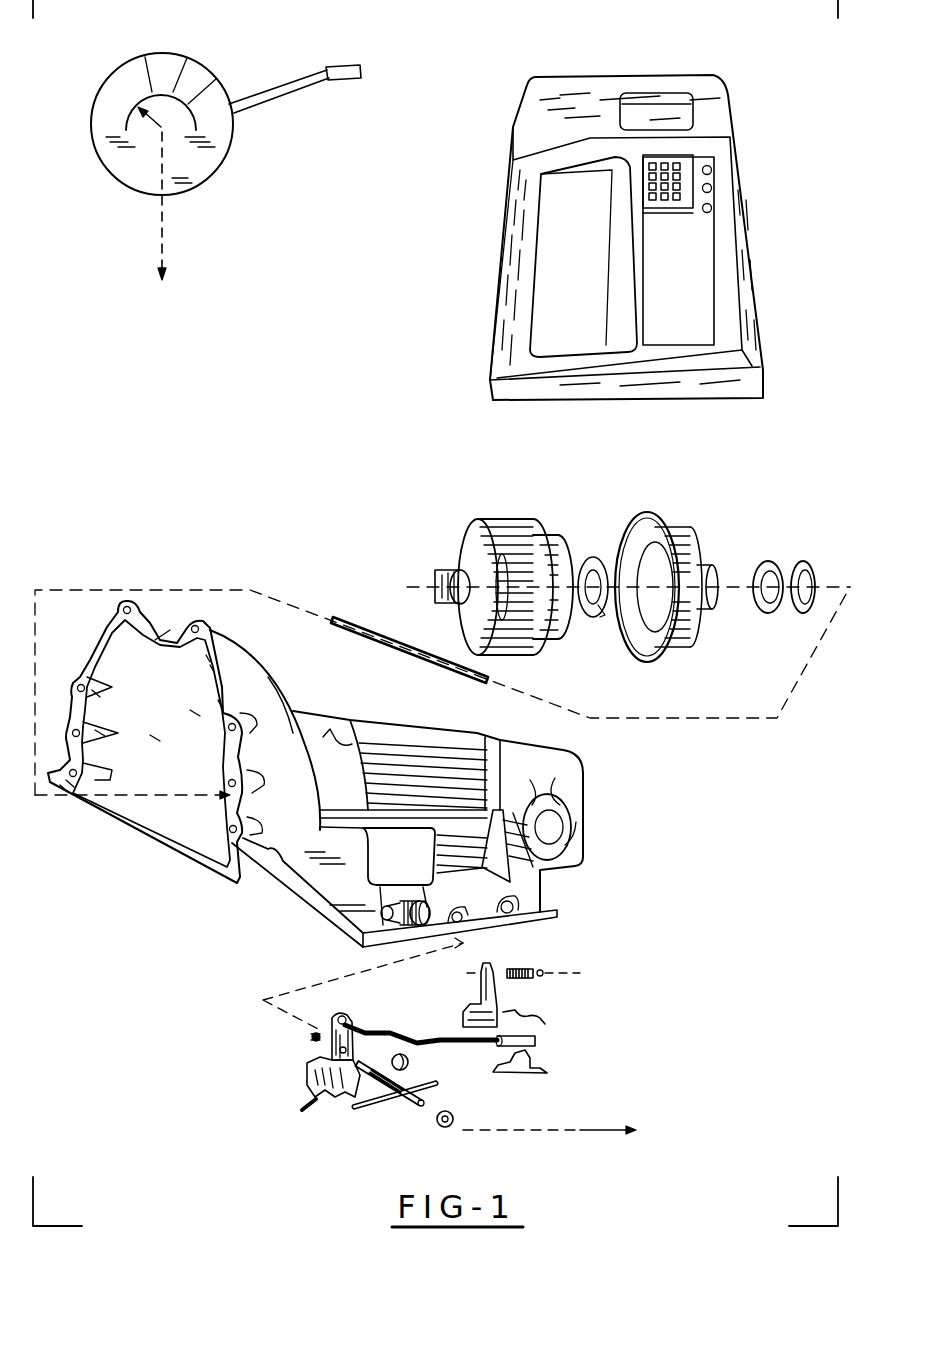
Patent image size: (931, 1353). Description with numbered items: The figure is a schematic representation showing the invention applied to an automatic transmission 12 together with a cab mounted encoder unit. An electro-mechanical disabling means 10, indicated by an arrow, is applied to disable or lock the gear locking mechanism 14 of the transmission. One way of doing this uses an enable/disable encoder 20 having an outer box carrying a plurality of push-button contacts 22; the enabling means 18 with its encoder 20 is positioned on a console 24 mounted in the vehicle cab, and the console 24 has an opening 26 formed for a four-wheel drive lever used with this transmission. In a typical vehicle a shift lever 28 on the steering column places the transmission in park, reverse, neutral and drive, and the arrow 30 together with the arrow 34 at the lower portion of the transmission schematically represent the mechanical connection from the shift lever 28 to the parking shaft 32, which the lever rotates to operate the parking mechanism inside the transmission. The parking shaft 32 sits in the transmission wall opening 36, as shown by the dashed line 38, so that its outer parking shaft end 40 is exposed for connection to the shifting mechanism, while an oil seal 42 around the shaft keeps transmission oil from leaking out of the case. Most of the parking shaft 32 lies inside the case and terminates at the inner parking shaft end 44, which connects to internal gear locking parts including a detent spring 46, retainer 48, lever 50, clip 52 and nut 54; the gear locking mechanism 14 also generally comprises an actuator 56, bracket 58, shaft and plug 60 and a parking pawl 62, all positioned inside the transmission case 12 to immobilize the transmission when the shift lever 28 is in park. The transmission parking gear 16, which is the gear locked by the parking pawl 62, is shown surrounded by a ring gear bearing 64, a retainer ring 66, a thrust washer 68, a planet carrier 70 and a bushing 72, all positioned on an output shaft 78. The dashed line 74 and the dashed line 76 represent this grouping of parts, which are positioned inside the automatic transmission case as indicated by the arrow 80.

The electro-mechanical disabling means 10 is at (340, 1102).
The automatic transmission 12 is at (315, 774).
The gear locking mechanism 14 is at (475, 1049).
The transmission parking gear 16 is at (655, 515).
The enabling means 18 is at (576, 237).
The enable/disable encoder 20 is at (718, 211).
The push-button contacts 22 is at (680, 160).
The console 24 is at (507, 212).
The opening 26 is at (590, 275).
The shift lever 28 is at (268, 106).
The arrow 30 is at (167, 232).
The parking shaft 32 is at (387, 1107).
The arrow 34 is at (598, 1130).
The transmission wall opening 36 is at (423, 902).
The dashed line 38 is at (353, 973).
The parking shaft end 40 is at (427, 1103).
The oil seal 42 is at (440, 1127).
The parking shaft end 44 is at (385, 1025).
The detent spring 46 is at (440, 1085).
The retainer 48 is at (412, 1063).
The lever 50 is at (323, 1060).
The clip 52 is at (303, 1103).
The nut 54 is at (310, 1037).
The actuator 56 is at (400, 1020).
The bracket 58 is at (547, 1065).
The shaft and plug 60 is at (525, 973).
The parking pawl 62 is at (473, 1000).
The ring gear bearing 64 is at (767, 560).
The retainer ring 66 is at (801, 560).
The thrust washer 68 is at (598, 555).
The planet carrier 70 is at (503, 520).
The bushing 72 is at (447, 570).
The dashed line 74 is at (690, 718).
The dashed line 76 is at (243, 588).
The output shaft 78 is at (385, 647).
The arrow 80 is at (192, 795).